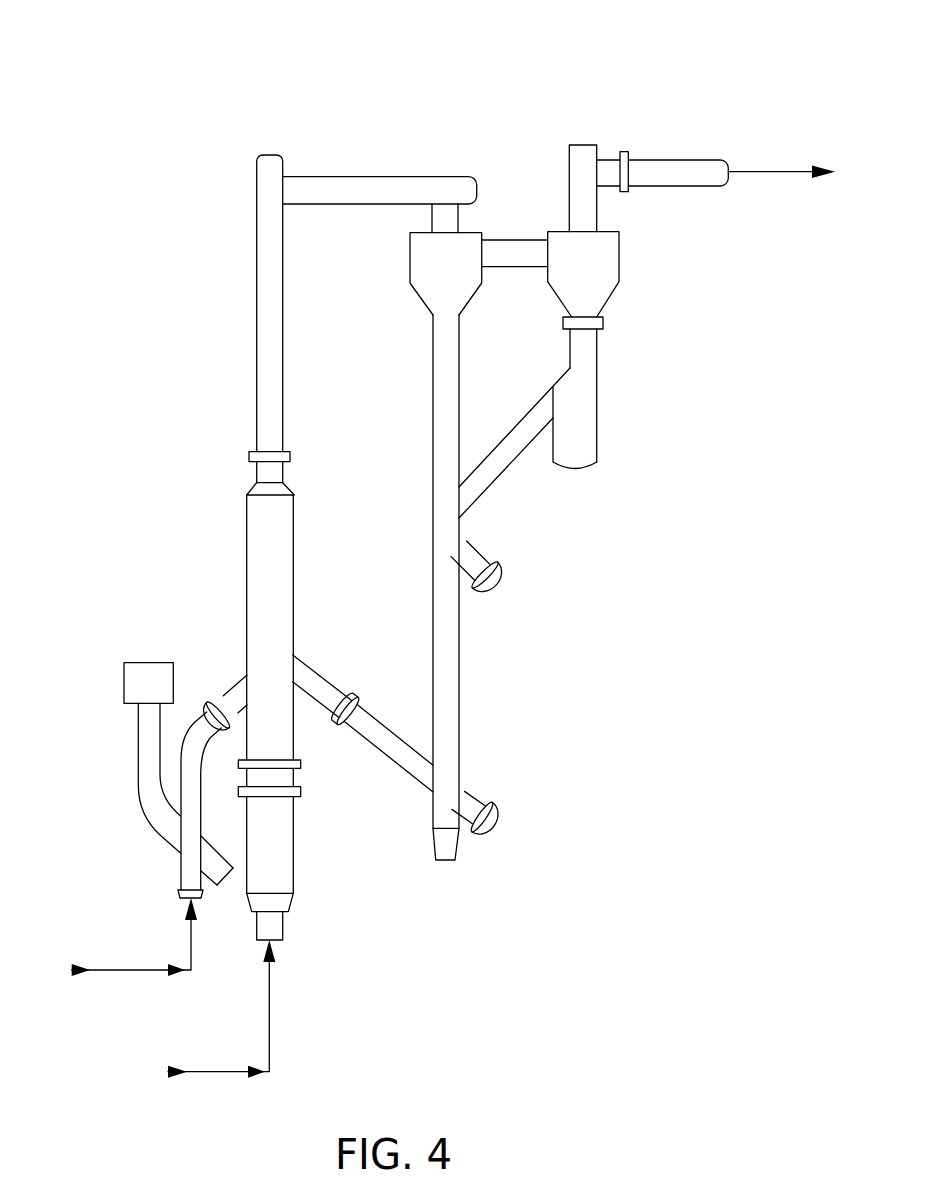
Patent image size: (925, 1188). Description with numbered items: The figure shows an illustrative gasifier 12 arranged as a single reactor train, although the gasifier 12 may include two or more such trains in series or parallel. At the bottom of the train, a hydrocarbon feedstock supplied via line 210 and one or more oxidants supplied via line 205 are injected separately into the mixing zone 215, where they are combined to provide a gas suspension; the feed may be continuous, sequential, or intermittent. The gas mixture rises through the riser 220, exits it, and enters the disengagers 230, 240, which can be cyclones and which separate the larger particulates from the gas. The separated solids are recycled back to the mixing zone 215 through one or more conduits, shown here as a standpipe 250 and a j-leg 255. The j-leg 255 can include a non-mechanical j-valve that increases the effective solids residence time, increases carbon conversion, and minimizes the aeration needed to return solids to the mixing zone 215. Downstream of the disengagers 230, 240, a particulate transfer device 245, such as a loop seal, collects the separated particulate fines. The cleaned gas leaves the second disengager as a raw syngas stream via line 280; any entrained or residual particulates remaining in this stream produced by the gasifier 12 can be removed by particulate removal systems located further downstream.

The gasifier 12 is at (78, 124).
The oxidant line 205 is at (122, 968).
The hydrocarbon feedstock line 210 is at (208, 1068).
The mixing zone 215 is at (262, 570).
The riser 220 is at (267, 228).
The disengager 230 is at (458, 279).
The disengager 240 is at (618, 253).
The particulate transfer device 245 is at (573, 468).
The standpipe 250 is at (459, 710).
The j-leg 255 is at (362, 695).
The raw syngas line 280 is at (767, 170).